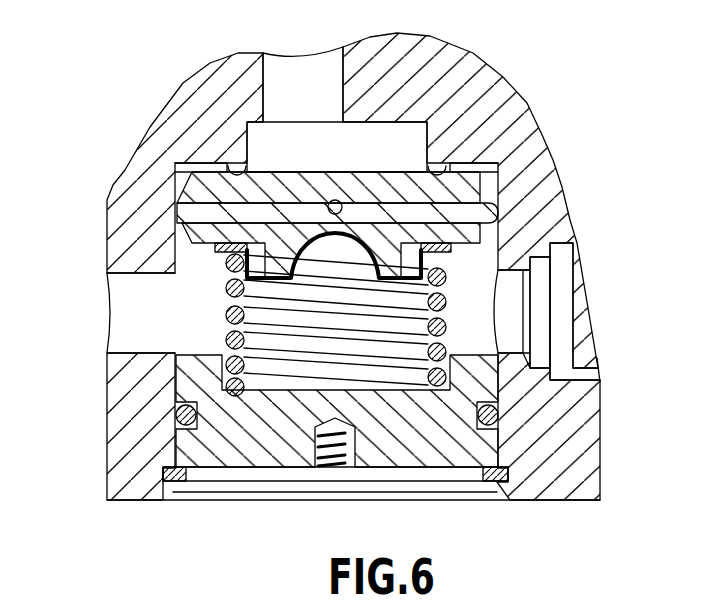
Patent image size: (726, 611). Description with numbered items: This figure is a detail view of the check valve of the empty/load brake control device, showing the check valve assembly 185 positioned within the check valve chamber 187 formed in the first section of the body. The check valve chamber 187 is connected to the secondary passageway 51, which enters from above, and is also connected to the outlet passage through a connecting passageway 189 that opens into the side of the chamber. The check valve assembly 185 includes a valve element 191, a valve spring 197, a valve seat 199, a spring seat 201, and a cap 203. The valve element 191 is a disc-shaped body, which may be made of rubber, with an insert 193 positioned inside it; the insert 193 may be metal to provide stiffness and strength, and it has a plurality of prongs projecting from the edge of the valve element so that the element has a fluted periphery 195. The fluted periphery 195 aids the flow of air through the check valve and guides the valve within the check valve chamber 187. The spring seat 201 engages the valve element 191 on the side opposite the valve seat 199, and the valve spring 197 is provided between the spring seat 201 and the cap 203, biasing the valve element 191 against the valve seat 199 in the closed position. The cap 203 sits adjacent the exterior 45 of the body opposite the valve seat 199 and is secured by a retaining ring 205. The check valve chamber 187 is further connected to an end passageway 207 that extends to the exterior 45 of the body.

The exterior 45 is at (130, 500).
The secondary passageway 51 is at (297, 85).
The check valve assembly 185 is at (570, 80).
The check valve chamber 187 is at (448, 290).
The connecting passageway 189 is at (130, 325).
The valve element 191 is at (455, 173).
The insert 193 is at (178, 240).
The fluted periphery 195 is at (480, 260).
The valve spring 197 is at (443, 296).
The valve seat 199 is at (238, 162).
The spring seat 201 is at (233, 253).
The cap 203 is at (443, 442).
The retaining ring 205 is at (187, 483).
The end passageway 207 is at (545, 325).